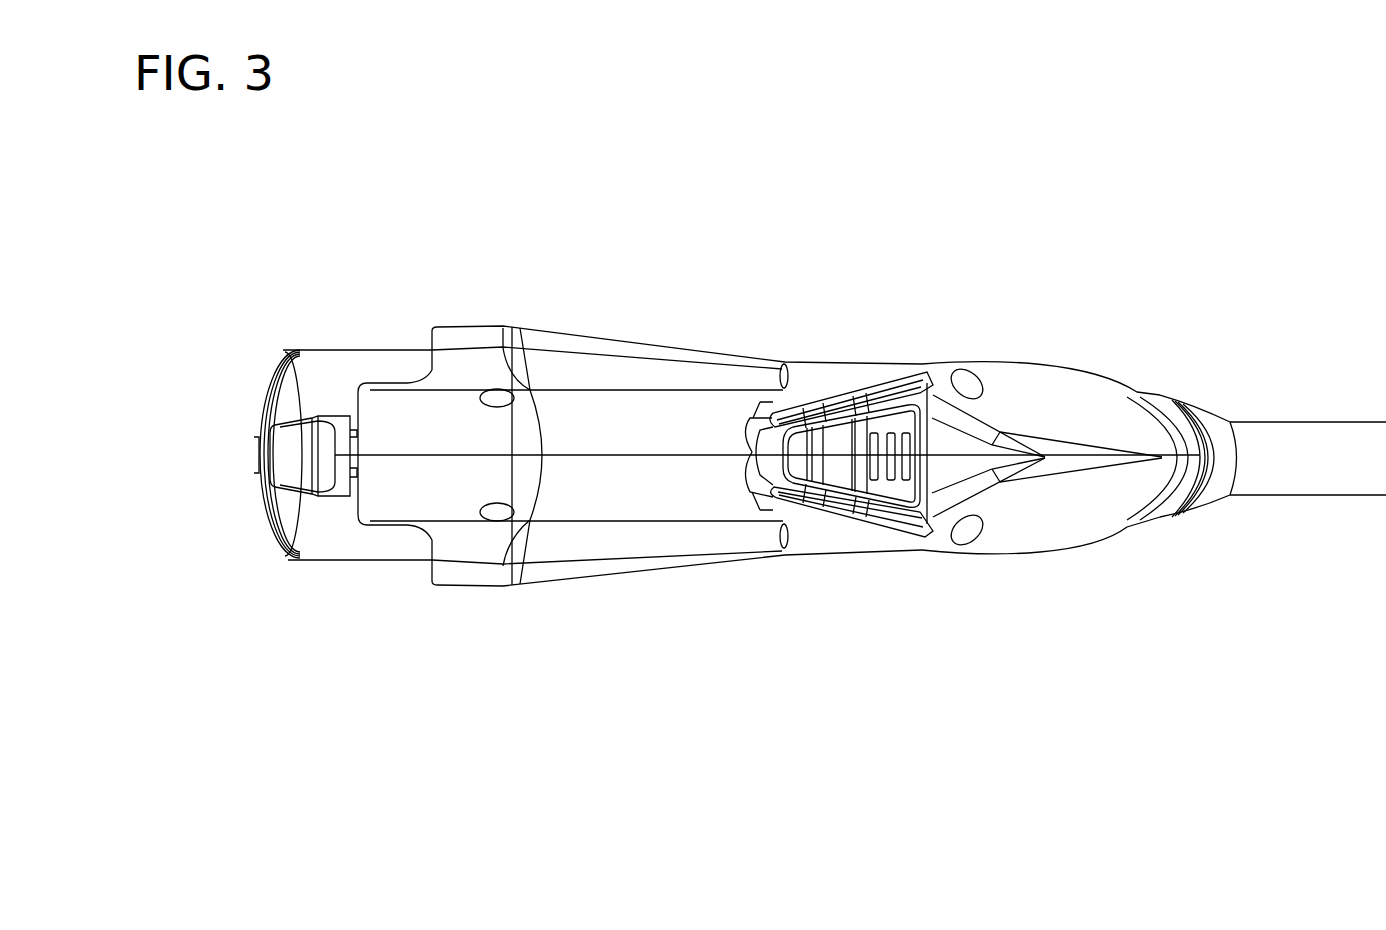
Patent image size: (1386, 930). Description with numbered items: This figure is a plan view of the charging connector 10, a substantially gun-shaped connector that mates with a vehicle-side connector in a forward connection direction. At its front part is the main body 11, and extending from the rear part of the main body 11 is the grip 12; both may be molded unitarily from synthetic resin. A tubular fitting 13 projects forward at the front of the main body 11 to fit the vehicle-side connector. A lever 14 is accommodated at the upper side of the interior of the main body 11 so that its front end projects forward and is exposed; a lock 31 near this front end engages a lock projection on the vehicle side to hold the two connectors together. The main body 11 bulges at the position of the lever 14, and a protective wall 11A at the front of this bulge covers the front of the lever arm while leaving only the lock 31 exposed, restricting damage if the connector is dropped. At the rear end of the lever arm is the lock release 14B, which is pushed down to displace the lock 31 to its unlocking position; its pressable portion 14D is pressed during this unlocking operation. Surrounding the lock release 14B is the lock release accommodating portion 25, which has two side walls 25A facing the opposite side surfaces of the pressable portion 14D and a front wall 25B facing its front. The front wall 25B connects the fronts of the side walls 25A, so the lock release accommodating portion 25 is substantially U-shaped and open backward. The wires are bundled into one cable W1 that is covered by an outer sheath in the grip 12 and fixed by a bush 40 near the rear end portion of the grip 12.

The charging connector 10 is at (798, 246).
The main body 11 is at (637, 331).
The protective wall 11A is at (382, 403).
The grip 12 is at (1069, 366).
The tubular fitting 13 is at (312, 358).
The lever 14 is at (344, 404).
The lock release 14B is at (842, 453).
The pressable portion 14D is at (892, 473).
The lock release accommodating portion 25 is at (925, 346).
The side walls 25A is at (855, 393).
The front wall 25B is at (766, 440).
The lock 31 is at (300, 443).
The bush 40 is at (1203, 417).
The cable W1 is at (1297, 433).